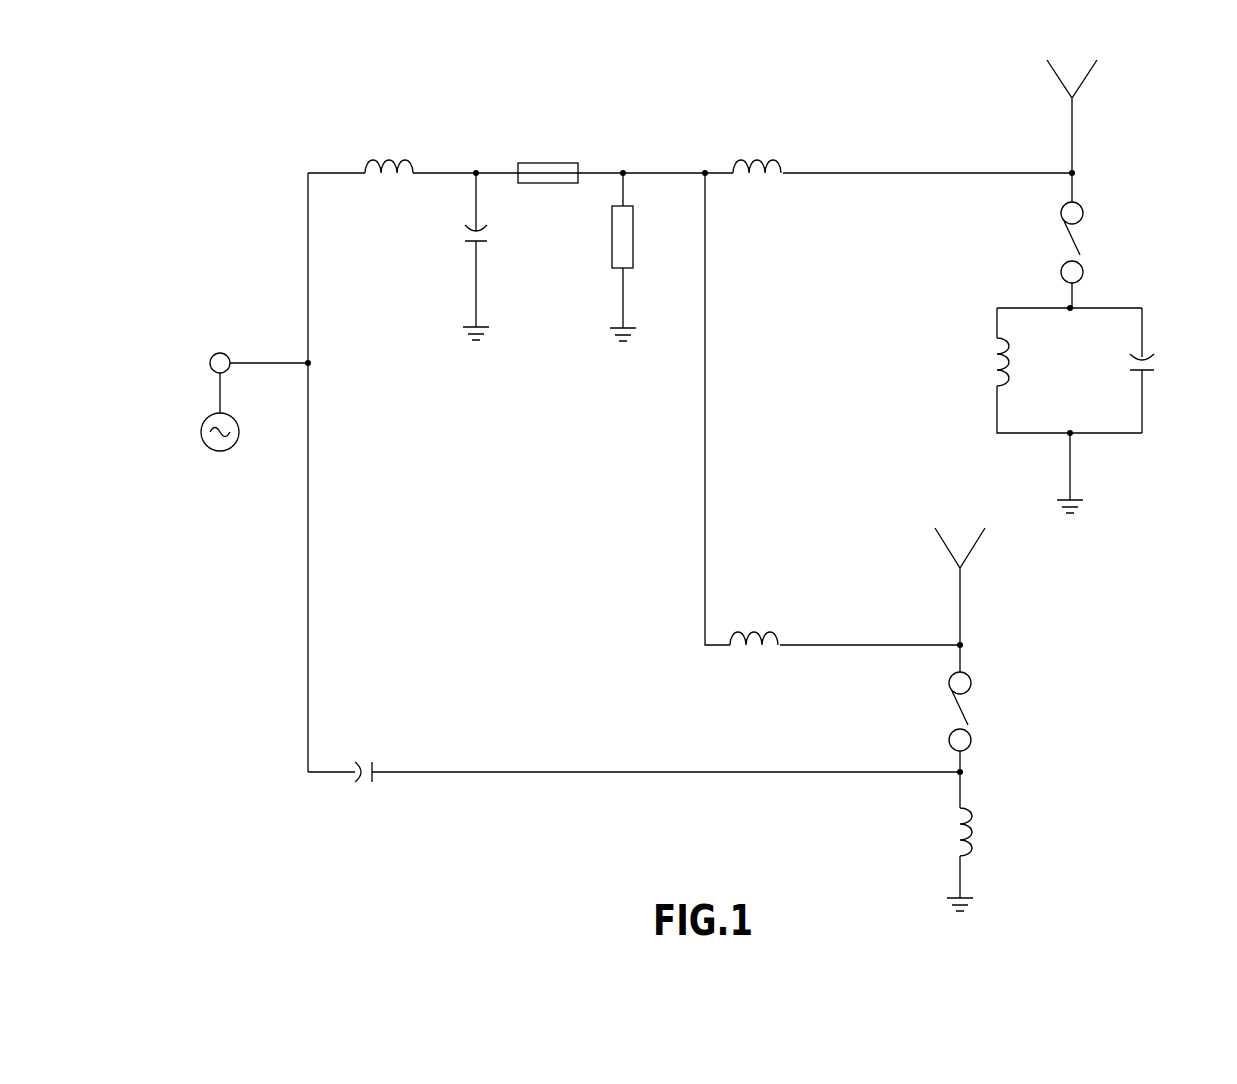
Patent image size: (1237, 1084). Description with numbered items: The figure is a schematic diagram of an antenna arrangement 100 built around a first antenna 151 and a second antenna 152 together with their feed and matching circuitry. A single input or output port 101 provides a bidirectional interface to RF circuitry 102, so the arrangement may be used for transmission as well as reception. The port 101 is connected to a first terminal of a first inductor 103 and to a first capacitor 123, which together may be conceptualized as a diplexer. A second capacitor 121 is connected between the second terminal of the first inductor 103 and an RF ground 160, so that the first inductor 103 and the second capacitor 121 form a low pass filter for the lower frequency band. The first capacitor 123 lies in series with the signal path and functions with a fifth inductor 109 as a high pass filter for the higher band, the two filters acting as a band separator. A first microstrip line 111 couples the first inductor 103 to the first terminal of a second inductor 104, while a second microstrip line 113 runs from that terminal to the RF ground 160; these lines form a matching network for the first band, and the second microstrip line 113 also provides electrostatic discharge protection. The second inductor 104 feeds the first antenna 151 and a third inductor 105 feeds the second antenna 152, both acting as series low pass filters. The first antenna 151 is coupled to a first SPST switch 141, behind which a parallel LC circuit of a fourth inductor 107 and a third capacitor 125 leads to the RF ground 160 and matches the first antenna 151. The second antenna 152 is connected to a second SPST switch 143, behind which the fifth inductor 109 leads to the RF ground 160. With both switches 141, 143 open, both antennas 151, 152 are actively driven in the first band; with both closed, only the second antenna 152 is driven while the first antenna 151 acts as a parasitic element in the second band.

The antenna arrangement 100 is at (296, 92).
The port 101 is at (226, 352).
The RF circuitry 102 is at (220, 451).
The first inductor 103 is at (378, 158).
The second inductor 104 is at (762, 158).
The third inductor 105 is at (758, 632).
The fourth inductor 107 is at (997, 362).
The fifth inductor 109 is at (958, 818).
The first microstrip line 111 is at (551, 163).
The second microstrip line 113 is at (612, 236).
The second capacitor 121 is at (465, 236).
The first capacitor 123 is at (362, 760).
The third capacitor 125 is at (1150, 362).
The first SPST switch 141 is at (1082, 207).
The second SPST switch 143 is at (970, 678).
The first antenna 151 is at (1072, 140).
The second antenna 152 is at (962, 606).
The RF ground 160 is at (476, 286).